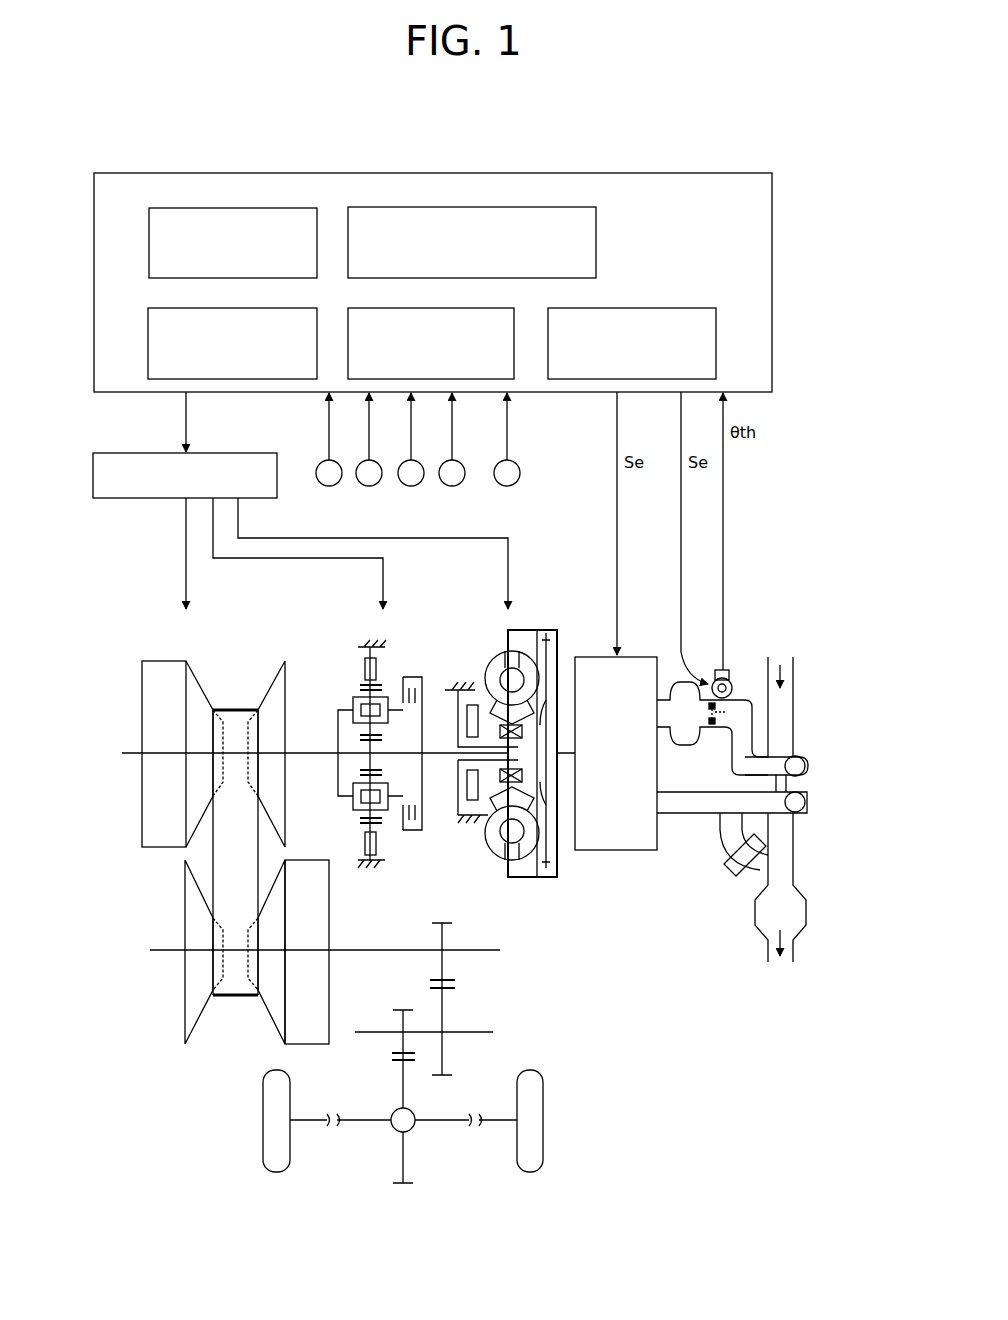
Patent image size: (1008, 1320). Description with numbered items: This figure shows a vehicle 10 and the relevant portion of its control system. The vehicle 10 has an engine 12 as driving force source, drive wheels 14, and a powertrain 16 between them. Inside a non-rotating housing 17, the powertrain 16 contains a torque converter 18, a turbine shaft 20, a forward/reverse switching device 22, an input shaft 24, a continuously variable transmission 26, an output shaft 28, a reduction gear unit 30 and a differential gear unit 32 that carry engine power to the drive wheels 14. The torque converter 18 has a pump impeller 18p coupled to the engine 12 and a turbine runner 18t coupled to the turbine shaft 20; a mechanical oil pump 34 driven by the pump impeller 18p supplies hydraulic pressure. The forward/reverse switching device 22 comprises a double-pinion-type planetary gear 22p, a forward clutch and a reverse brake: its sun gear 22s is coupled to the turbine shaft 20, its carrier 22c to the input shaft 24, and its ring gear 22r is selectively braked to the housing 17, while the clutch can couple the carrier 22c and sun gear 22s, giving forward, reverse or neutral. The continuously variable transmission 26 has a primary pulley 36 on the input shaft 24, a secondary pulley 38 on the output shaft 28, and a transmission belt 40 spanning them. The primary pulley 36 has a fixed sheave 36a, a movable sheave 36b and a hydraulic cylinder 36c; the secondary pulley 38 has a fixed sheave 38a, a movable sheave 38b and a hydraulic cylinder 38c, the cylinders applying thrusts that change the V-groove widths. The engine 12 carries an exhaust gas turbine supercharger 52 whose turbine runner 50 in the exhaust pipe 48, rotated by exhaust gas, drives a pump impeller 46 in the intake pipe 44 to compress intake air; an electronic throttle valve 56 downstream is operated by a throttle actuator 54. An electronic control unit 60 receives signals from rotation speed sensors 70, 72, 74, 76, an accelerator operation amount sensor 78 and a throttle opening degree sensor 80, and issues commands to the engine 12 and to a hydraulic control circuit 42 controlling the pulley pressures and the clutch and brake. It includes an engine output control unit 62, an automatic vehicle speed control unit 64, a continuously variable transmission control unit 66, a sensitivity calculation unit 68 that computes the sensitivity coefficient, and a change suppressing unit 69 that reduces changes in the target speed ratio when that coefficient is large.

The vehicle 10 is at (637, 126).
The engine 12 is at (632, 840).
The drive wheels 14 is at (270, 1145).
The powertrain 16 is at (540, 556).
The housing 17 is at (385, 641).
The torque converter 18 is at (519, 743).
The pump impeller 18p is at (496, 852).
The turbine runner 18t is at (520, 858).
The turbine shaft 20 is at (371, 709).
The forward/reverse switching device 22 is at (368, 709).
The double-pinion-type planetary gear 22p is at (370, 626).
The carrier 22c is at (355, 698).
The sun gear 22s is at (358, 765).
The ring gear 22r is at (362, 845).
The input shaft 24 is at (338, 748).
The continuously variable transmission 26 is at (330, 1145).
The output shaft 28 is at (382, 955).
The reduction gear unit 30 is at (500, 1005).
The differential gear unit 32 is at (396, 1130).
The mechanical oil pump 34 is at (482, 720).
The primary pulley 36 is at (194, 756).
The fixed sheave 36a is at (275, 686).
The movable sheave 36b is at (193, 687).
The hydraulic cylinder 36c is at (158, 670).
The secondary pulley 38 is at (310, 975).
The fixed sheave 38a is at (192, 1005).
The movable sheave 38b is at (275, 1003).
The hydraulic cylinder 38c is at (322, 935).
The transmission belt 40 is at (237, 708).
The hydraulic control circuit 42 is at (158, 499).
The intake pipe 44 is at (795, 682).
The pump impeller 46 is at (802, 760).
The exhaust pipe 48 is at (795, 862).
The turbine runner 50 is at (797, 806).
The exhaust gas turbine supercharger 52 is at (806, 805).
The throttle actuator 54 is at (733, 688).
The electronic throttle valve 56 is at (712, 726).
The electronic control unit 60 is at (704, 183).
The engine output control unit 62 is at (270, 208).
The automatic vehicle speed control unit 64 is at (270, 308).
The continuously variable transmission control unit 66 is at (464, 207).
The sensitivity calculation unit 68 is at (466, 308).
The change suppressing unit 69 is at (666, 308).
The rotation speed sensor 70 is at (327, 487).
The rotation speed sensor 72 is at (369, 487).
The rotation speed sensor 74 is at (411, 487).
The rotation speed sensor 76 is at (453, 487).
The accelerator operation amount sensor 78 is at (507, 487).
The throttle opening degree sensor 80 is at (728, 670).